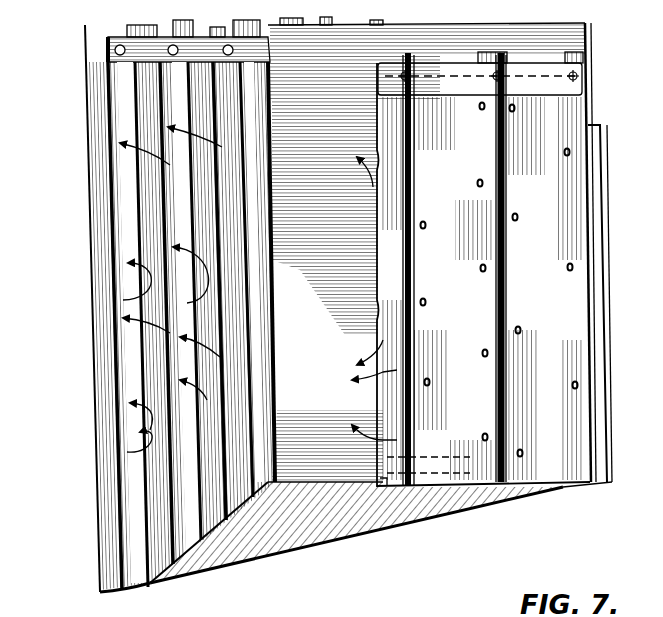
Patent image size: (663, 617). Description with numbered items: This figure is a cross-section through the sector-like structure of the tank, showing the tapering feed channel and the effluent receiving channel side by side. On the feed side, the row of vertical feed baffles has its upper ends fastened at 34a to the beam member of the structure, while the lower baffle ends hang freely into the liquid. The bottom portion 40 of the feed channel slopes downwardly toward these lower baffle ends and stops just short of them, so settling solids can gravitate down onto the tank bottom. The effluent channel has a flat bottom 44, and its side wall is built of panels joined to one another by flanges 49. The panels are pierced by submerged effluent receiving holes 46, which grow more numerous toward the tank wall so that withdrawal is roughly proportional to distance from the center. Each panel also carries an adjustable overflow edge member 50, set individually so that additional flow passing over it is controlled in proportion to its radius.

The fastening of baffle upper ends 34a is at (107, 68).
The bottom portion of feed channel 40 is at (173, 553).
The flat bottom of effluent channel 44 is at (383, 490).
The effluent receiving holes 46 is at (482, 353).
The flanges 49 is at (411, 262).
The adjustable overflow edge member 50 is at (460, 93).